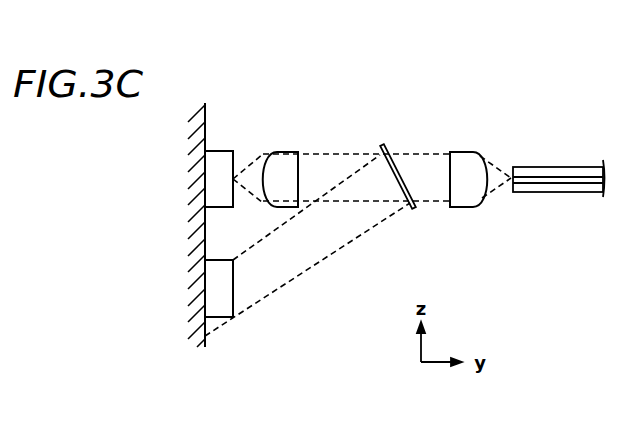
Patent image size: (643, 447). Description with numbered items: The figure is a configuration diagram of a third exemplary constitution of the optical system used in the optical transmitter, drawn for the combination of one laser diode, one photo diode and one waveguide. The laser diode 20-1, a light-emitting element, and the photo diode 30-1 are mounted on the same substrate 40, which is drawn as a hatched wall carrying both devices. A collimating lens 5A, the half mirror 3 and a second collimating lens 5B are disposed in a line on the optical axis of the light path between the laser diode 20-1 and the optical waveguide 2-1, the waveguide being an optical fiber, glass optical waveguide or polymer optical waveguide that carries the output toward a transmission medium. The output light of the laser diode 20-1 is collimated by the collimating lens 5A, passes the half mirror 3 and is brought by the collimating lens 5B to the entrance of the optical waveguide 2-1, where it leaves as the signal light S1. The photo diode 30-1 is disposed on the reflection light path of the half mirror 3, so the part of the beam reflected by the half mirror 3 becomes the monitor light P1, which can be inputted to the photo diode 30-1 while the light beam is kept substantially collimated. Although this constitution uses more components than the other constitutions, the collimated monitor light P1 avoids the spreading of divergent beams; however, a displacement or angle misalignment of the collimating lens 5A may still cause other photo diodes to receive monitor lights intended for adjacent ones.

The substrate 40 is at (205, 239).
The laser diode 20-1 is at (220, 160).
The photo diode 30-1 is at (215, 307).
The collimating lens 5A is at (277, 152).
The collimating lens 5B is at (472, 152).
The half mirror 3 is at (410, 206).
The monitor light P1 is at (315, 245).
The signal light S1 is at (504, 174).
The optical waveguide 2-1 is at (565, 167).